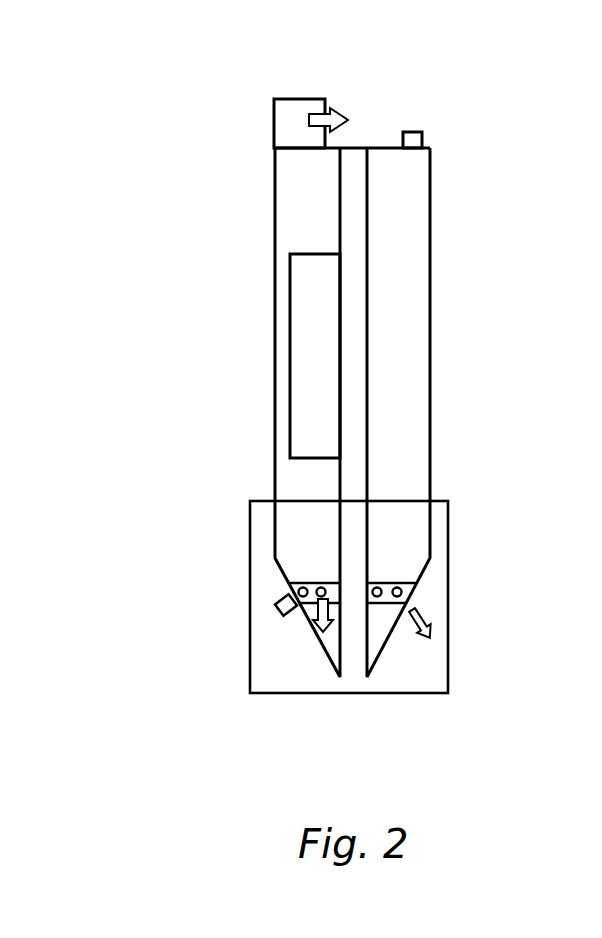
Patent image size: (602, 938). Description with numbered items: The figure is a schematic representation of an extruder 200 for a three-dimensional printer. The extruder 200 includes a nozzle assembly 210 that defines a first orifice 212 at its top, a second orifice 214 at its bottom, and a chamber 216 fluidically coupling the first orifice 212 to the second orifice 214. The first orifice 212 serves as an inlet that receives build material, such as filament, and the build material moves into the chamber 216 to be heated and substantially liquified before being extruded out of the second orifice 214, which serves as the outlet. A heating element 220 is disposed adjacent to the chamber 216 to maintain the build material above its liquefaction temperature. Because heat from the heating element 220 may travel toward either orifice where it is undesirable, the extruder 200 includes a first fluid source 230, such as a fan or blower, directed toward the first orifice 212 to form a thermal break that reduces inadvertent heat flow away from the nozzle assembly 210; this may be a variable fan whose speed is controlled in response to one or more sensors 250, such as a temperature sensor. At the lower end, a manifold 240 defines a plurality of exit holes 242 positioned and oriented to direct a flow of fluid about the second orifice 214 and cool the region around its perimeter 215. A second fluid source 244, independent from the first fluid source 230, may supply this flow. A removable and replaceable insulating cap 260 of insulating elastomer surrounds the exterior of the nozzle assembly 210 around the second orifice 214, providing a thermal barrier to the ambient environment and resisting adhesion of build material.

The extruder 200 is at (132, 150).
The nozzle assembly 210 is at (272, 476).
The first orifice 212 is at (353, 157).
The second orifice 214 is at (350, 672).
The perimeter 215 is at (370, 676).
The chamber 216 is at (367, 384).
The heating element 220 is at (308, 309).
The first fluid source 230 is at (315, 98).
The manifold 240 is at (258, 584).
The exit holes 242 is at (403, 592).
The second fluid source 244 is at (278, 613).
The sensors 250 is at (422, 133).
The insulating cap 260 is at (448, 688).